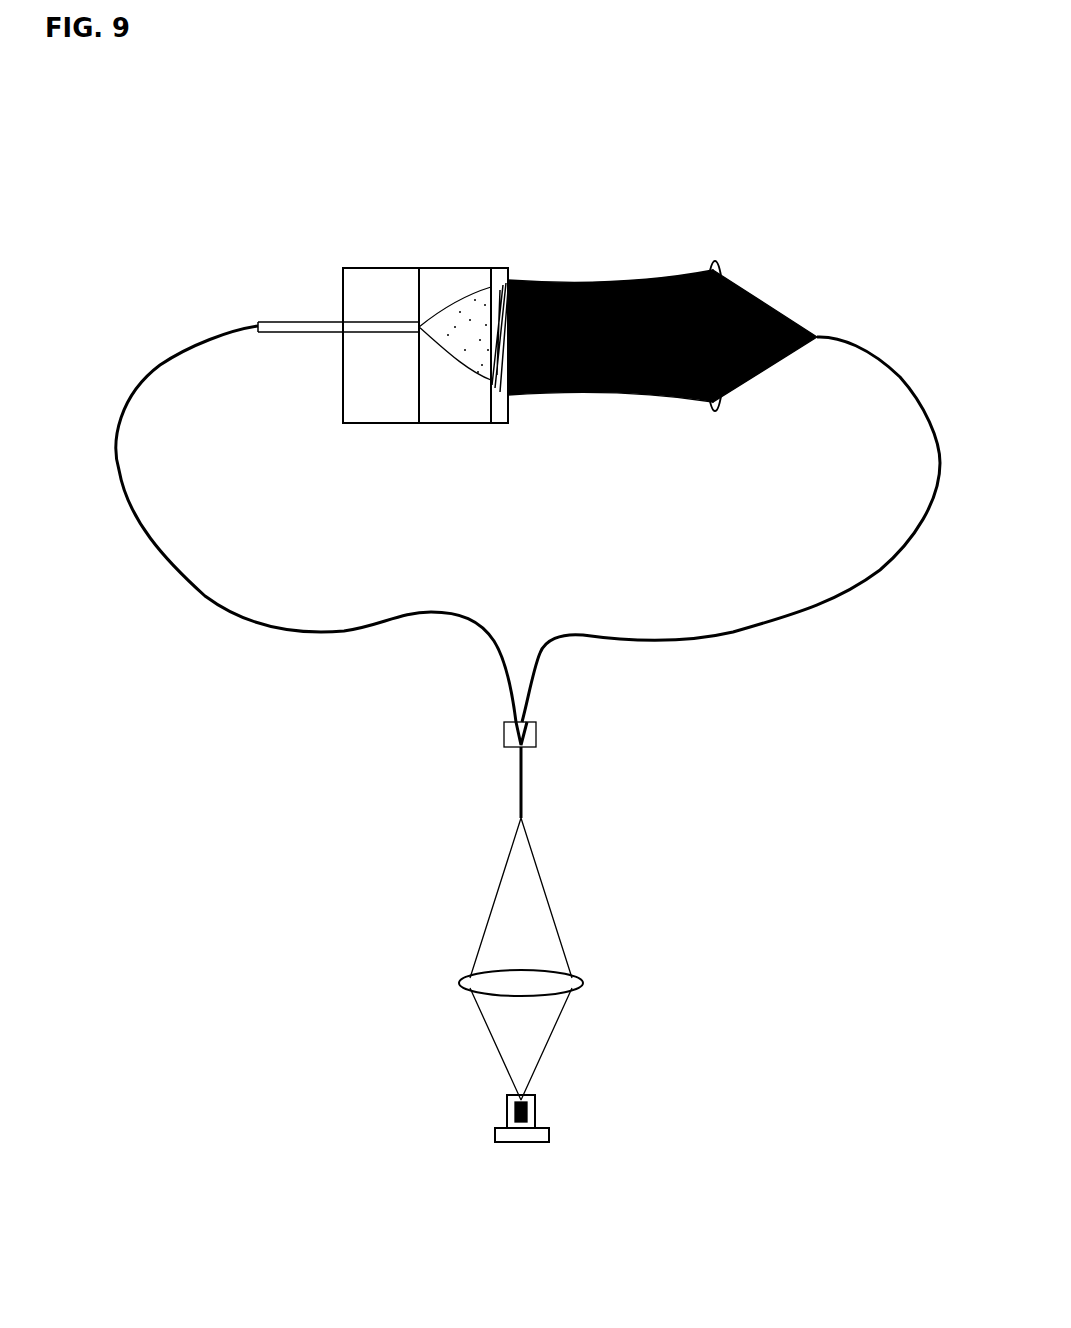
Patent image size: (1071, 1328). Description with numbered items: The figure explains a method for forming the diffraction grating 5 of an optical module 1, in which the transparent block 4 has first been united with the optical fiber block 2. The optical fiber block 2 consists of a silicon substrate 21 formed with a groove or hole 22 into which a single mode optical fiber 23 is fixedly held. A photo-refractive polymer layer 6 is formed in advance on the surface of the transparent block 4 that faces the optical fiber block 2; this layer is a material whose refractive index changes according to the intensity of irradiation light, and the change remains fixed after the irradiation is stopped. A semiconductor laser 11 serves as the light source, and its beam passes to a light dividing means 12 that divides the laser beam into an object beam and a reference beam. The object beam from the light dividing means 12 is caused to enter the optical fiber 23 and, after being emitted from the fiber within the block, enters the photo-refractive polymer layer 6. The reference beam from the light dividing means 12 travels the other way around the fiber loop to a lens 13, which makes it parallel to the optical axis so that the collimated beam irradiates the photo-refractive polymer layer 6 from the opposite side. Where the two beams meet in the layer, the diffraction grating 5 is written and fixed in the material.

The optical module 1 is at (385, 332).
The optical fiber block 2 is at (374, 323).
The transparent block 4 is at (437, 415).
The diffraction grating 5 is at (498, 280).
The photo-refractive polymer layer 6 is at (497, 410).
The semiconductor laser 11 is at (517, 1142).
The light dividing means 12 is at (504, 734).
The lens 13 is at (722, 282).
The silicon substrate 21 is at (355, 371).
The groove or hole 22 is at (407, 328).
The single mode optical fiber 23 is at (282, 325).